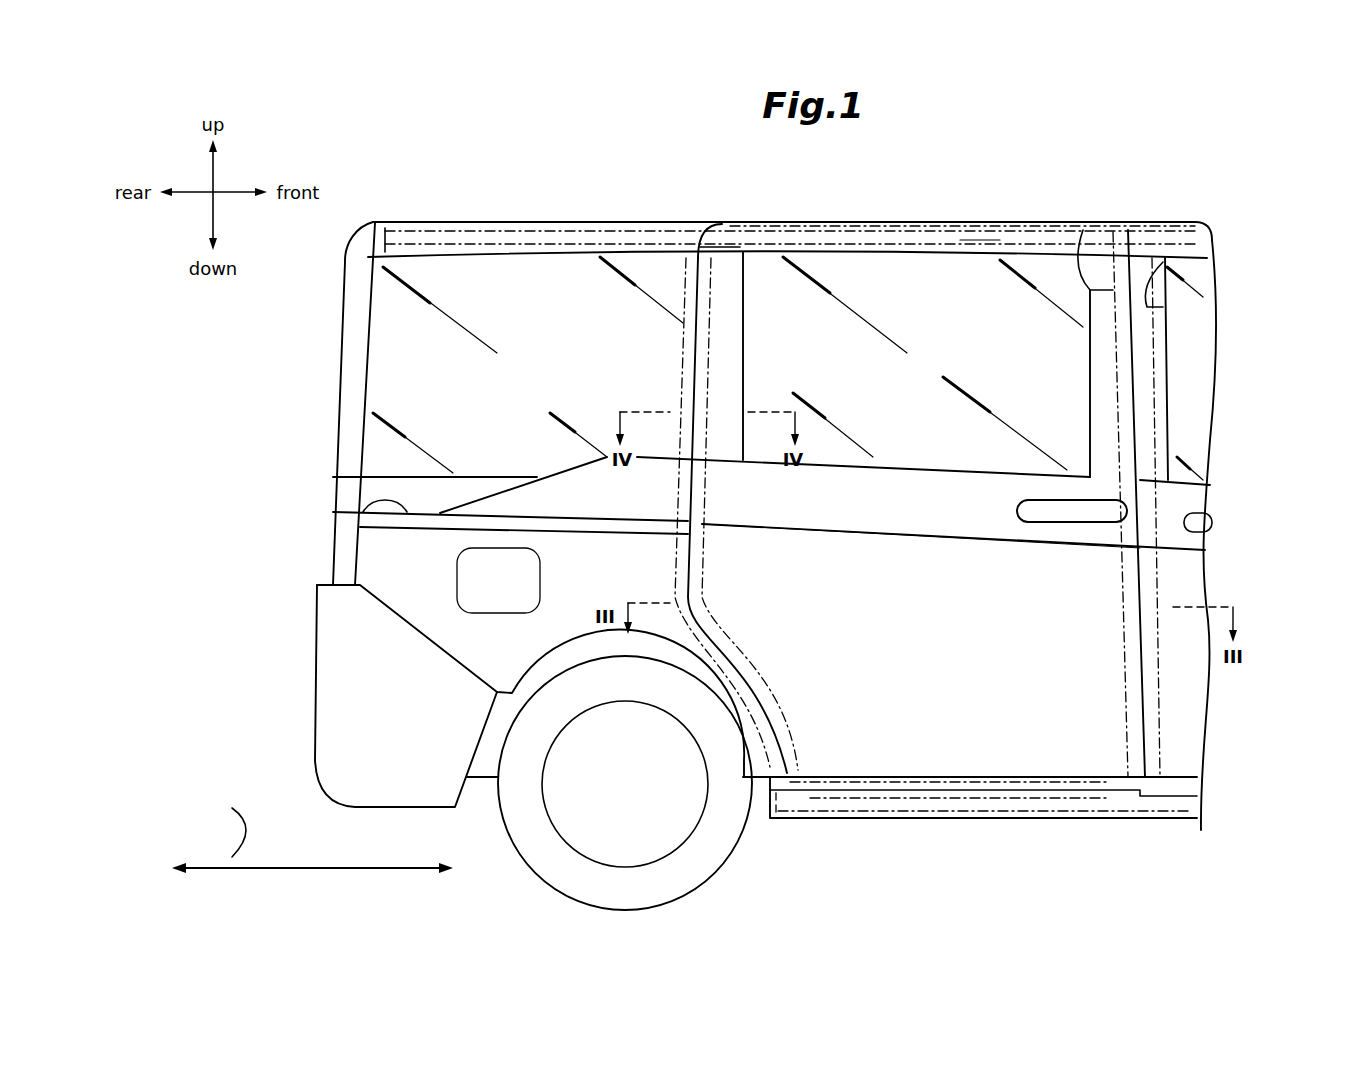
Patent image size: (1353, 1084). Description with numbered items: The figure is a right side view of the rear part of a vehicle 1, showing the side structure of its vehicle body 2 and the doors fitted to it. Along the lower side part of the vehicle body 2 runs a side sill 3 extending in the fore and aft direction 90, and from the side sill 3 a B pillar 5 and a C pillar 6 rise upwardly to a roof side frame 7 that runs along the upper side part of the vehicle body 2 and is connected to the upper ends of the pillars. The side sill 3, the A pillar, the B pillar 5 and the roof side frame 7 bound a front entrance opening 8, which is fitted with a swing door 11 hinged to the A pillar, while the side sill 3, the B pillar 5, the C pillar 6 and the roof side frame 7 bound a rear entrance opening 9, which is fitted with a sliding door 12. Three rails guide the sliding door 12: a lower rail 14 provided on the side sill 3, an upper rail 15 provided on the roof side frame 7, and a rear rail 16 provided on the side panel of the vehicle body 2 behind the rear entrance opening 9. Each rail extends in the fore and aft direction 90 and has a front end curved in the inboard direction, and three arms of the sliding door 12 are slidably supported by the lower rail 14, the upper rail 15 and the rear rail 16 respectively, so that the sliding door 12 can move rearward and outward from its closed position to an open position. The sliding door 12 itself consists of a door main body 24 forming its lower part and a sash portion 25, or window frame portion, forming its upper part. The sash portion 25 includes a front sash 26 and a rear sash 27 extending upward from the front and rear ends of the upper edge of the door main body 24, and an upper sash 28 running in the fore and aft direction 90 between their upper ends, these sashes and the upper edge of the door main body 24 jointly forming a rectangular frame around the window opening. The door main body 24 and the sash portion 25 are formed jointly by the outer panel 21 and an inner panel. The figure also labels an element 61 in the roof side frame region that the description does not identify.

The vehicle 1 is at (415, 176).
The vehicle body 2 is at (470, 222).
The side sill 3 is at (1020, 825).
The B pillar 5 is at (1160, 233).
The C pillar 6 is at (713, 310).
The roof side frame 7 is at (577, 223).
The front entrance opening 8 is at (1147, 392).
The rear entrance opening 9 is at (1079, 258).
The swing door 11 is at (1200, 685).
The sliding door 12 is at (1050, 745).
The lower rail 14 is at (890, 800).
The upper rail 15 is at (845, 237).
The rear rail 16 is at (395, 503).
The outer panel 21 is at (968, 765).
The door main body 24 is at (866, 706).
The sash portion 25 is at (746, 341).
The front sash 26 is at (1098, 372).
The rear sash 27 is at (733, 362).
The upper sash 28 is at (929, 228).
The upper rail 61 is at (987, 268).
The fore and aft direction 90 is at (312, 833).